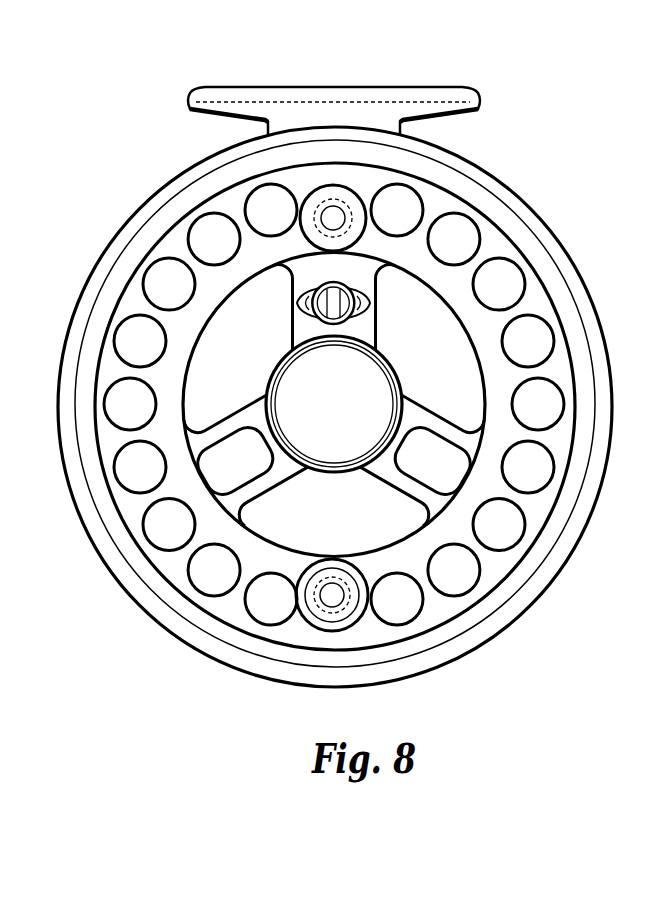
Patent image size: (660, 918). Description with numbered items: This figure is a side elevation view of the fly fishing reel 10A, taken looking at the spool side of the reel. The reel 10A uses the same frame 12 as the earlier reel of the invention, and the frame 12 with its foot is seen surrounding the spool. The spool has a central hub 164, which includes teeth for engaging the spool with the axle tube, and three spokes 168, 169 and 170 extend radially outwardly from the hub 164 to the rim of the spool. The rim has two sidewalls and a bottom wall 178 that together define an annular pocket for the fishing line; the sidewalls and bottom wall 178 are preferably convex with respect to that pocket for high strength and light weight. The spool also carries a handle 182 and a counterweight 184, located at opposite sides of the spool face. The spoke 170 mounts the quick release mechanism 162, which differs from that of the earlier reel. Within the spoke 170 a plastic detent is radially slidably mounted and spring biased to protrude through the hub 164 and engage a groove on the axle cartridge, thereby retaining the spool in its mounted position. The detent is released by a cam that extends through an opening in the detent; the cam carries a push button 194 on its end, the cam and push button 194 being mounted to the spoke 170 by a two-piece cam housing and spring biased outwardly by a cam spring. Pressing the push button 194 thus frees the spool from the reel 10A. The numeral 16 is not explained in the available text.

The frame 12 is at (187, 93).
The fly fishing reel 10A is at (530, 192).
The frame 16 is at (213, 626).
The bottom wall 178 is at (210, 347).
The counterweight 184 is at (350, 214).
The handle 182 is at (338, 607).
The hub 164 is at (262, 395).
The spoke 170 is at (298, 277).
The spoke 169 is at (455, 434).
The spoke 168 is at (252, 492).
The quick release mechanism 162 is at (357, 283).
The push button 194 is at (353, 318).